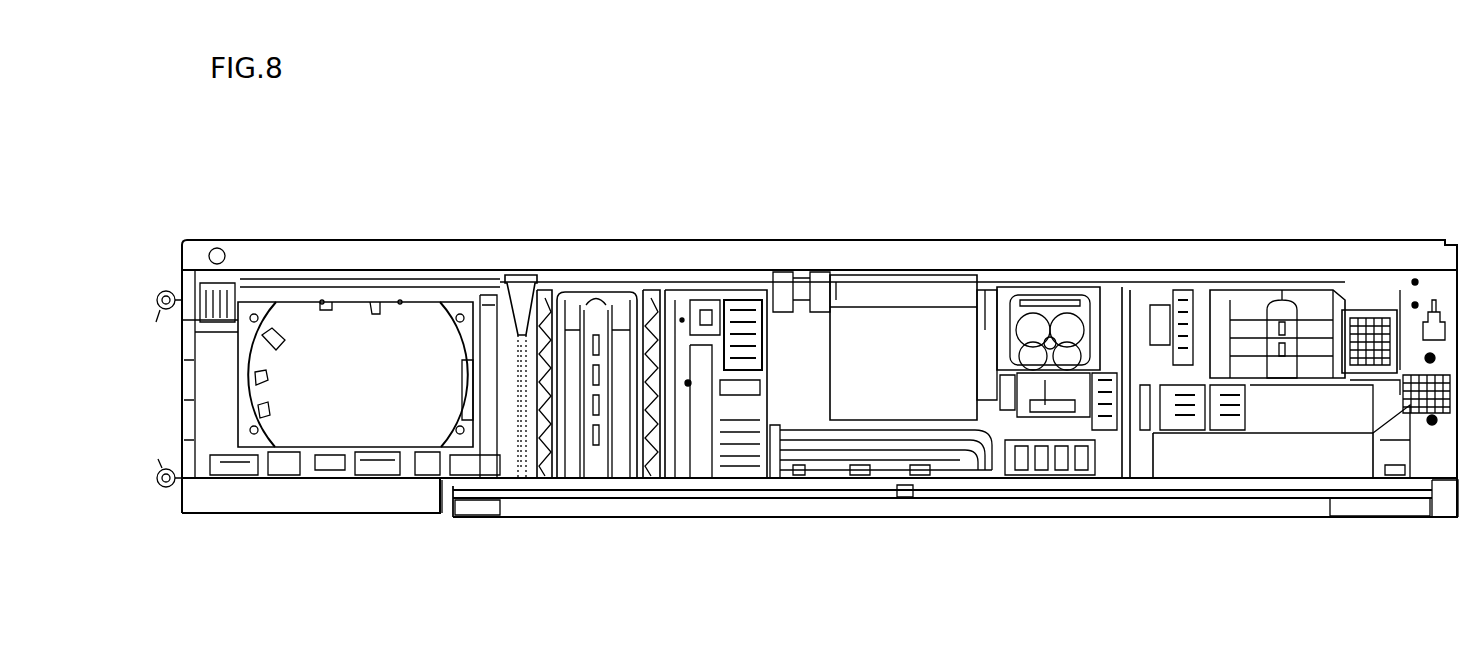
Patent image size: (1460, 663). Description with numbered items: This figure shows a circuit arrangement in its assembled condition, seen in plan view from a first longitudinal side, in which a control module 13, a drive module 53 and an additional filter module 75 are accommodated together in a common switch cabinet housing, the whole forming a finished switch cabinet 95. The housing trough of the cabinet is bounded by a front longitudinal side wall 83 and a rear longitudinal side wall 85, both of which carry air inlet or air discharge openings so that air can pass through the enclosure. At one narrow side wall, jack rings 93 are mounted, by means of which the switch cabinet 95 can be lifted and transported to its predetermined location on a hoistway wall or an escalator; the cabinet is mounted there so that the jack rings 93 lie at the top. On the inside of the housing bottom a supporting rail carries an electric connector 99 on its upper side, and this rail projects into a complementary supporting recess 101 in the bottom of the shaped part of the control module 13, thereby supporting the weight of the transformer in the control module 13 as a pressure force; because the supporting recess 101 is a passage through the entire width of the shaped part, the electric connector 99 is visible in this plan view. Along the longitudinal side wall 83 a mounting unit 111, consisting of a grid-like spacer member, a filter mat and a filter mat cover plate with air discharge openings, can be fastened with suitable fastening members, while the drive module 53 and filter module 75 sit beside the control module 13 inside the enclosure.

The switch cabinet 95 is at (243, 220).
The rear longitudinal side wall 85 is at (327, 240).
The electric connector 99 is at (520, 343).
The supporting recess 101 is at (545, 290).
The jack rings 93 is at (165, 389).
The front longitudinal side wall 83 is at (268, 502).
The control module 13 is at (330, 430).
The mounting unit 111 is at (686, 508).
The drive module 53 is at (936, 402).
The filter module 75 is at (1291, 420).